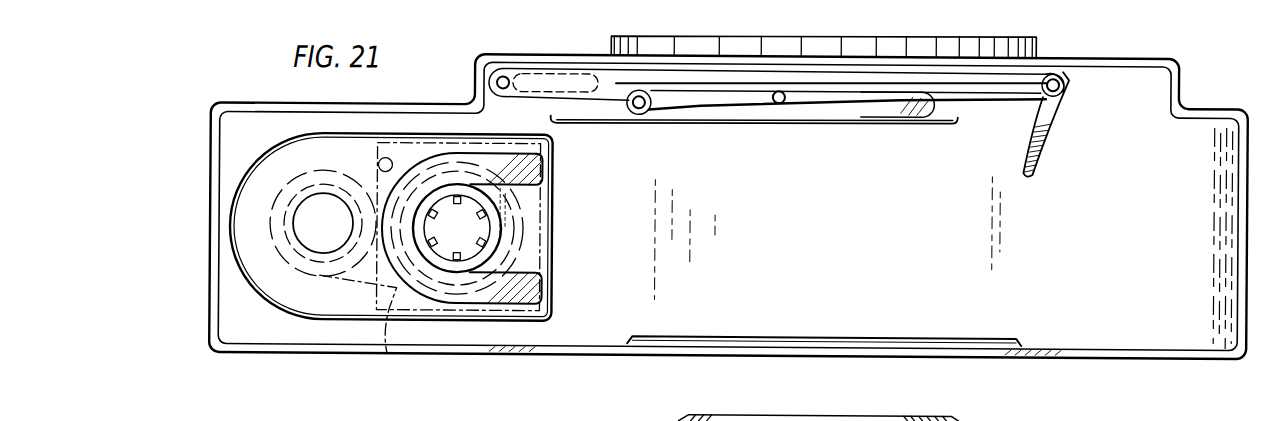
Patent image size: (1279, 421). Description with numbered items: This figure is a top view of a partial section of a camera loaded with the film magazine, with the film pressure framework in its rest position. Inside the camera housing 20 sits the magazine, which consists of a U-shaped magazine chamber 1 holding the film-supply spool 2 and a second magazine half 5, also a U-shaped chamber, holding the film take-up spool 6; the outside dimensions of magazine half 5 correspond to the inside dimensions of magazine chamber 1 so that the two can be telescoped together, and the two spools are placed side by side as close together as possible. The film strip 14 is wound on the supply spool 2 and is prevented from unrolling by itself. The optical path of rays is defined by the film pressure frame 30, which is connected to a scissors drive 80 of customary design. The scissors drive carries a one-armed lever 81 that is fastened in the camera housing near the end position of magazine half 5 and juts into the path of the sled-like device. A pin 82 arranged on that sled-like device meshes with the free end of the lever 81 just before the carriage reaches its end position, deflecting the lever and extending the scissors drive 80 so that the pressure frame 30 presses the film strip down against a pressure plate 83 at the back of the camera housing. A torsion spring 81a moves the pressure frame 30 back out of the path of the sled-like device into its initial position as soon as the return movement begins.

The magazine chamber 1 is at (237, 234).
The film-supply spool 2 is at (292, 251).
The second magazine half 5 is at (538, 248).
The film take-up spool 6 is at (487, 224).
The film strip 14 is at (388, 356).
The camera housing 20 is at (1140, 349).
The film pressure frame 30 is at (702, 123).
The scissors drive 80 is at (813, 102).
The one-armed lever 81 is at (1032, 151).
The torsion spring 81a is at (1086, 68).
The pin 82 is at (378, 168).
The pressure plate 83 is at (762, 340).